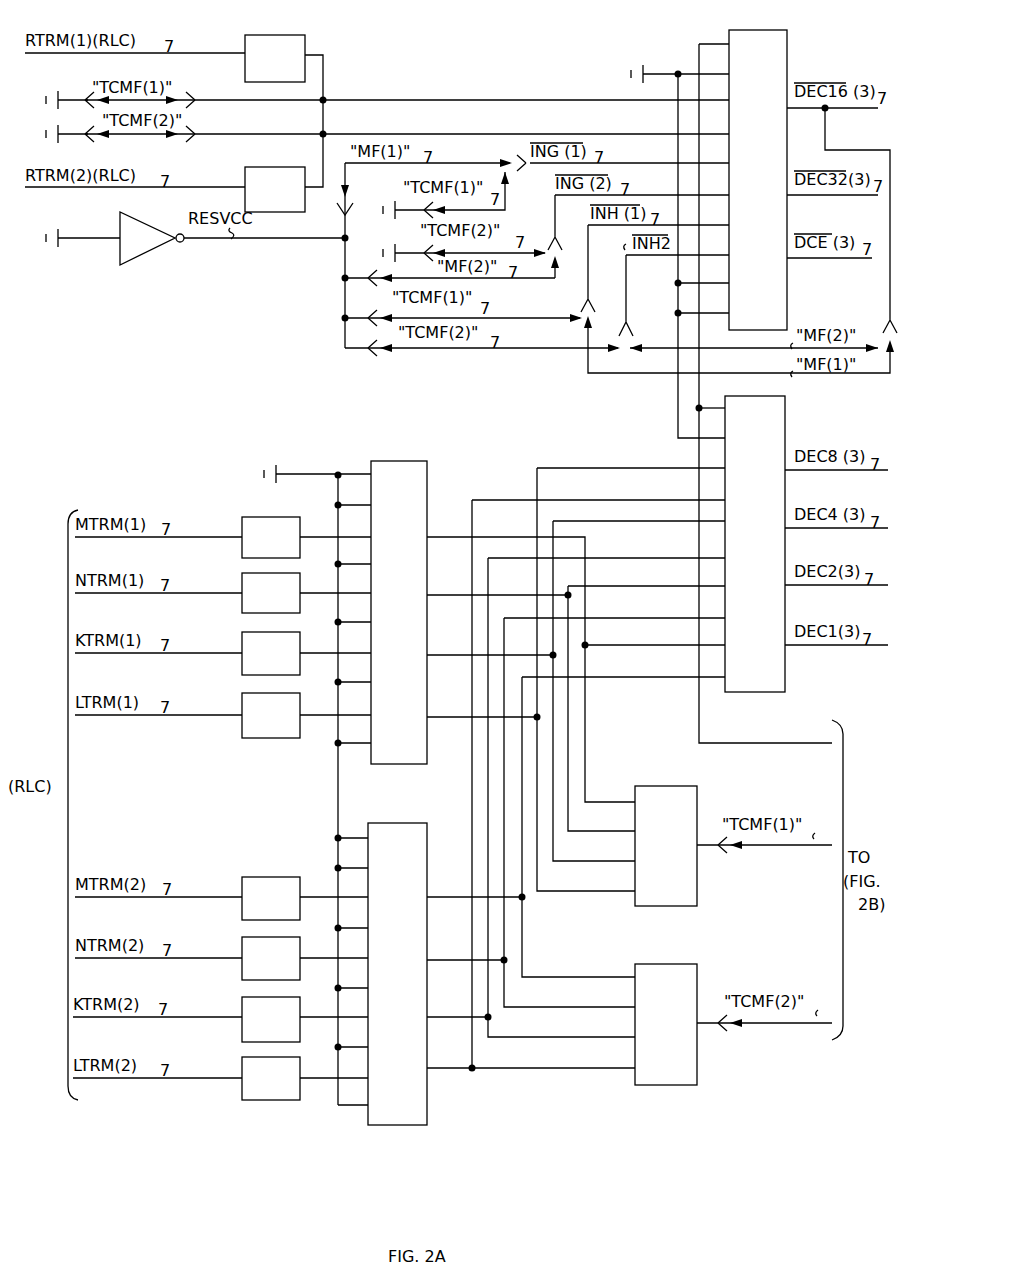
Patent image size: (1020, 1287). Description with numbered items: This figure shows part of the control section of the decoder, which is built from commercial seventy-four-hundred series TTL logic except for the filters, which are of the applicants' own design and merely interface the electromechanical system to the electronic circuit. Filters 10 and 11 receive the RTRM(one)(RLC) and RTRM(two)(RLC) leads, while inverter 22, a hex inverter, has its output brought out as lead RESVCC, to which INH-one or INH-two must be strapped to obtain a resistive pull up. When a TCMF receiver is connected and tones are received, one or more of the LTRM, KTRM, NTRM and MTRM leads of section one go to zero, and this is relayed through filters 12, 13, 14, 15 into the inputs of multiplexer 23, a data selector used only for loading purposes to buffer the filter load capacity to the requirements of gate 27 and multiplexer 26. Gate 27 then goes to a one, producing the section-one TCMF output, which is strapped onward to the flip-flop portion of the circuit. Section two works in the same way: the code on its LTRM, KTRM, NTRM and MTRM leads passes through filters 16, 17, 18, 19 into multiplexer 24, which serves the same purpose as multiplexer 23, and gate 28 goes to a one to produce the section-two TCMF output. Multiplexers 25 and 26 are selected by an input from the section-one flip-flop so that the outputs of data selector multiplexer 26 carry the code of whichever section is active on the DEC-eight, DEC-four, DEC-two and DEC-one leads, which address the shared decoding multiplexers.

The filter 10 is at (275, 44).
The filter 11 is at (275, 176).
The inverter 22 is at (143, 256).
The filter 12 is at (294, 524).
The filter 13 is at (294, 578).
The filter 14 is at (294, 635).
The filter 15 is at (294, 702).
The filter 16 is at (294, 878).
The filter 17 is at (294, 938).
The filter 18 is at (294, 998).
The filter 19 is at (300, 1102).
The multiplexer 23 is at (418, 466).
The multiplexer 24 is at (410, 822).
The multiplexer 25 is at (780, 58).
The multiplexer 26 is at (786, 442).
The gate 27 is at (684, 796).
The gate 28 is at (668, 965).